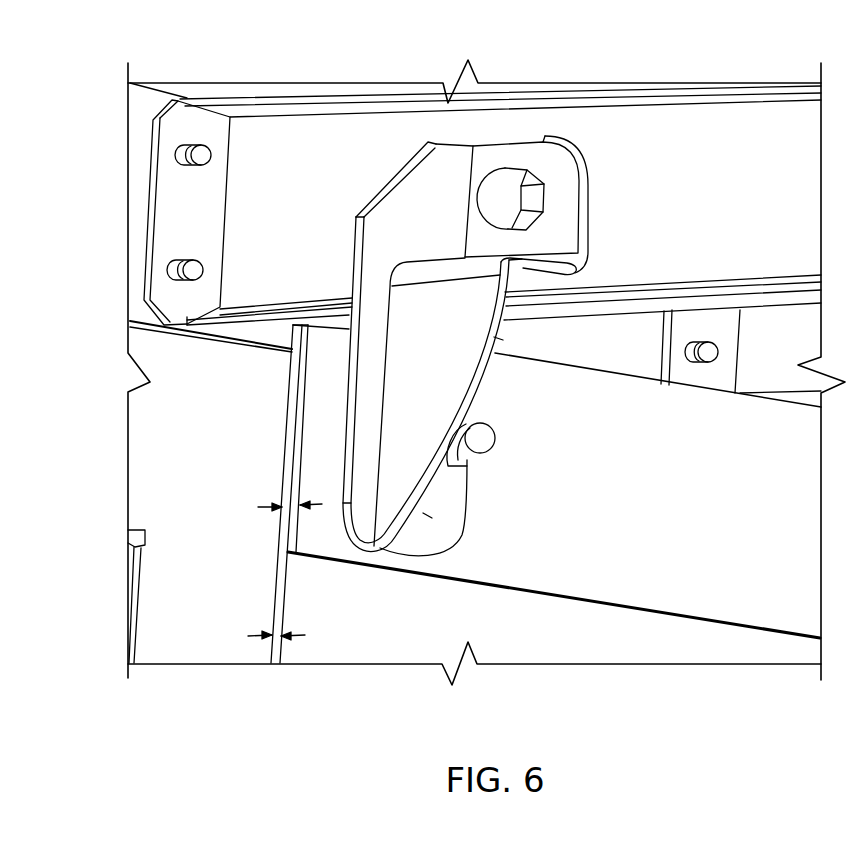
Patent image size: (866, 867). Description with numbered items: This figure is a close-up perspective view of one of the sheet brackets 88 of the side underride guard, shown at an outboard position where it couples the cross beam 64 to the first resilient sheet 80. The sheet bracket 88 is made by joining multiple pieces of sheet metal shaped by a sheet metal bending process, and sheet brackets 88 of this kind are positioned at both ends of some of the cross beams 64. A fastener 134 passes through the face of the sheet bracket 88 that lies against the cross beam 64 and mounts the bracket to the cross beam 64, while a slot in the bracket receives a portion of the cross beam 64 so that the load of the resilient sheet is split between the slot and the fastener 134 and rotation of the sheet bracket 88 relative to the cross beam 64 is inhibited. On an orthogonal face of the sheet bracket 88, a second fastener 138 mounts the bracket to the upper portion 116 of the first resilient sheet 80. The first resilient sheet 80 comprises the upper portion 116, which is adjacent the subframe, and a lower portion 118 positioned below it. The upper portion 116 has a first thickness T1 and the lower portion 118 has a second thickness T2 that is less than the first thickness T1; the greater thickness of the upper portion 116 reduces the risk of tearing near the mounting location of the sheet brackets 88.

The cross beam 64 is at (658, 125).
The first resilient sheet 80 is at (210, 632).
The sheet bracket 88 is at (432, 133).
The upper portion 116 is at (315, 420).
The lower portion 118 is at (302, 598).
The fastener 134 is at (520, 186).
The fastener 138 is at (483, 441).
The first thickness T1 is at (300, 505).
The second thickness T2 is at (278, 642).